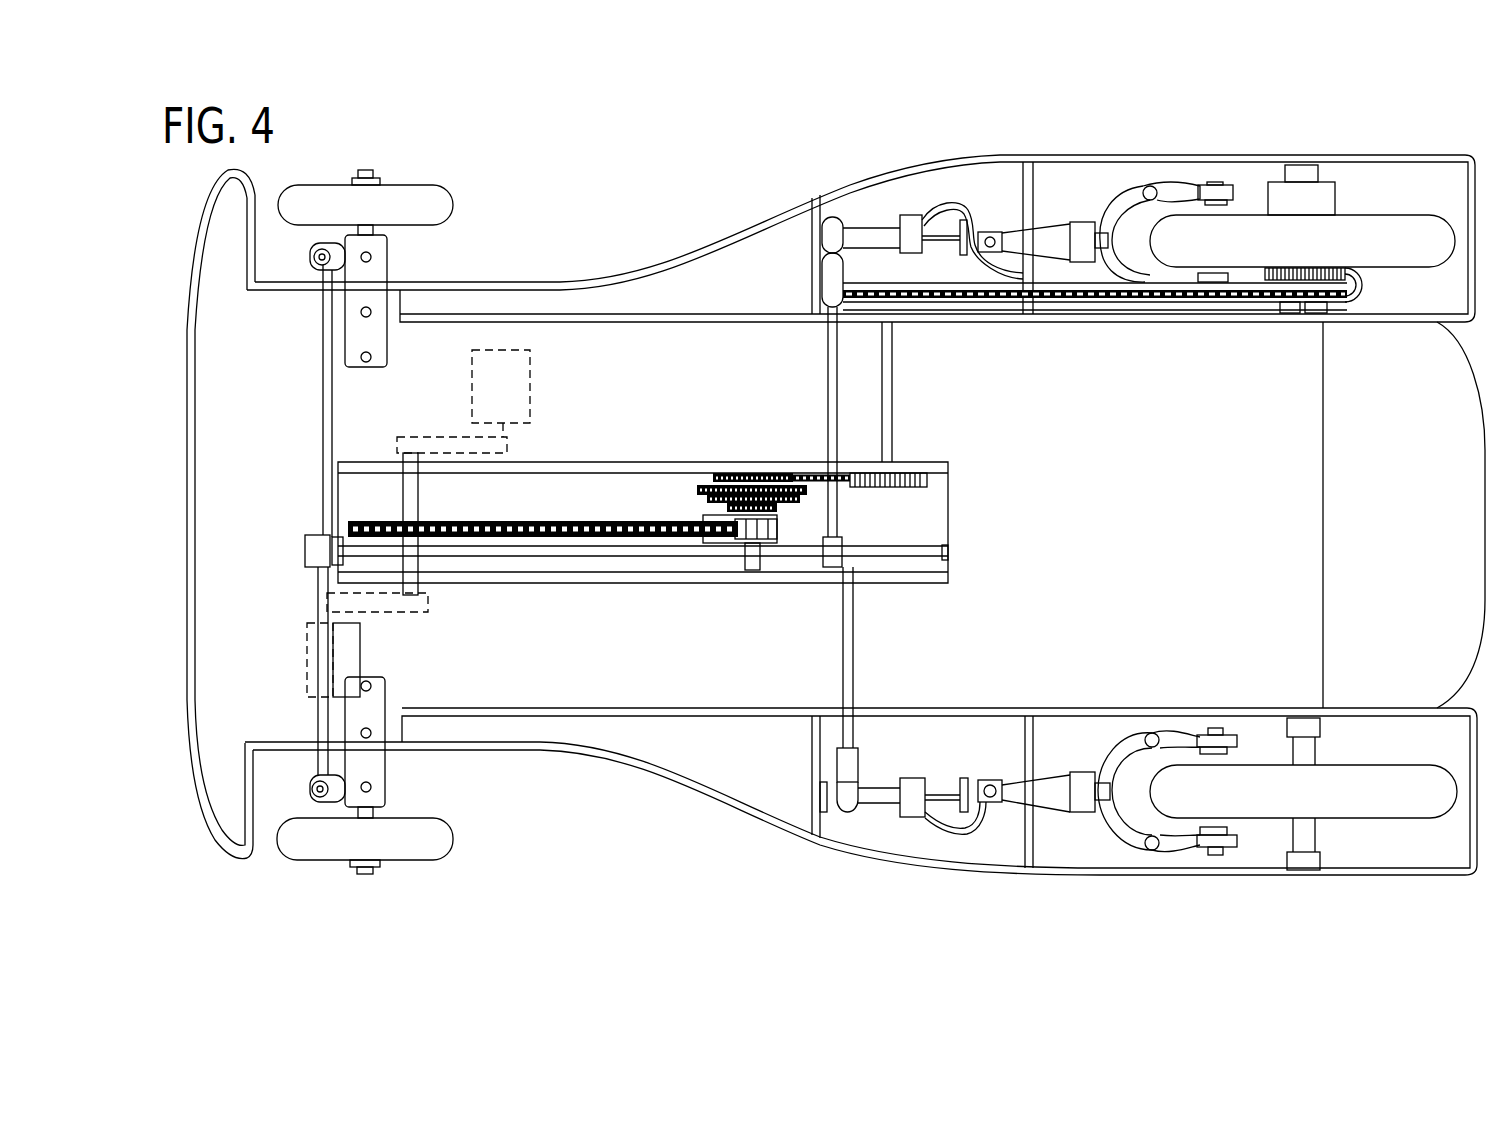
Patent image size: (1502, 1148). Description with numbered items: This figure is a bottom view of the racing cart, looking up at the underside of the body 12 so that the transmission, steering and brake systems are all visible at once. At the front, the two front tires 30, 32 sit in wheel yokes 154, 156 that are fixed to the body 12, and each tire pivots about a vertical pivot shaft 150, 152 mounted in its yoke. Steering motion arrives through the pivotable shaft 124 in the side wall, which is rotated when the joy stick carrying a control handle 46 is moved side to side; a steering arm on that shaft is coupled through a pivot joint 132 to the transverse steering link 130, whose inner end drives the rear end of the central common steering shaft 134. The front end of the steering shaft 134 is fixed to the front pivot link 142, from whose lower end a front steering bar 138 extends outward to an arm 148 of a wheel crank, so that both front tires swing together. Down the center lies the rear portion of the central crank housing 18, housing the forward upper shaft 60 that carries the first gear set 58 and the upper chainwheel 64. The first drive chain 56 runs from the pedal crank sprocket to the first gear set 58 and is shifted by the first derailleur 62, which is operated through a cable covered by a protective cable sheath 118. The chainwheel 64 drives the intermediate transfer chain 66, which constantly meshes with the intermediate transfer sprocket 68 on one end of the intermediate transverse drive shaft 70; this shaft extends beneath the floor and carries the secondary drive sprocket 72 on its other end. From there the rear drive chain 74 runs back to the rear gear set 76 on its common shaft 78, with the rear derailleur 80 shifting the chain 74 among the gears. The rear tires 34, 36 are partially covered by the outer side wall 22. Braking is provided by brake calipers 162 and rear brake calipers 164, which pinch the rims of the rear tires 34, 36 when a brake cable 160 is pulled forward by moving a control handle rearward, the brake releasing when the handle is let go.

The body 12 is at (716, 808).
The central crank housing 18 is at (630, 470).
The outer side wall 22 is at (1195, 875).
The front tire 30 is at (425, 195).
The front tire 32 is at (432, 845).
The rear tire 34 is at (1258, 230).
The rear tire 36 is at (1352, 797).
The control handle 46 is at (314, 246).
The first drive chain 56 is at (556, 521).
The first gear set 58 is at (700, 495).
The forward upper shaft 60 is at (745, 568).
The first derailleur 62 is at (770, 543).
The upper chainwheel 64 is at (725, 475).
The intermediate transfer chain 66 is at (818, 482).
The intermediate transfer sprocket 68 is at (905, 488).
The intermediate transverse drive shaft 70 is at (892, 400).
The secondary drive sprocket 72 is at (912, 290).
The rear drive chain 74 is at (1163, 300).
The rear gear set 76 is at (1290, 313).
The common shaft 78 is at (1302, 168).
The rear derailleur 80 is at (1318, 312).
The protective cable sheath 118 is at (1367, 283).
The pivotable shaft 124 is at (873, 228).
The transverse steering link 130 is at (828, 368).
The pivot joint 132 is at (832, 217).
The central common steering shaft 134 is at (533, 556).
The front steering bar 138 is at (323, 393).
The front pivot link 142 is at (307, 535).
The arm 148 is at (312, 727).
The vertical pivot shaft 150 is at (371, 257).
The vertical pivot shaft 152 is at (371, 787).
The wheel yoke 154 is at (376, 337).
The wheel yoke 156 is at (380, 705).
The brake cable 160 is at (948, 205).
The brake calipers 162 is at (1125, 200).
The rear brake calipers 164 is at (1133, 835).